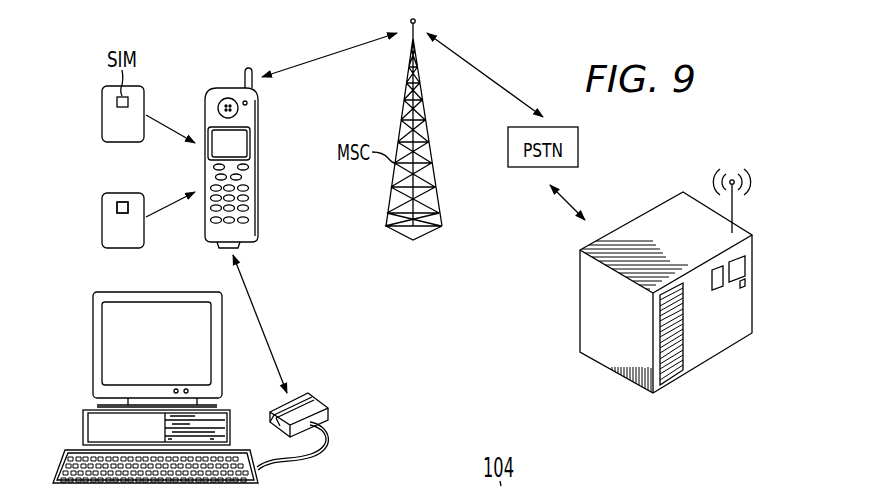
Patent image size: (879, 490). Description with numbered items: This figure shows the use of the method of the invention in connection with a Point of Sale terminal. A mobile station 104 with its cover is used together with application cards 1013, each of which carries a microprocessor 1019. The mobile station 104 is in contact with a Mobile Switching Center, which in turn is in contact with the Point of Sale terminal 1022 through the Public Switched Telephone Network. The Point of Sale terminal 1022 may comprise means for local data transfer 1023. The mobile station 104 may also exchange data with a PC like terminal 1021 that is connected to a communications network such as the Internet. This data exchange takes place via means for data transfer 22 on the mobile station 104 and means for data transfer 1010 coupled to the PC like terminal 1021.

The mobile station 104 is at (228, 88).
The means for data transfer 22 is at (224, 246).
The application cards 1013 is at (102, 112).
The microprocessor 1019 is at (122, 202).
The PC like terminal 1021 is at (93, 346).
The means for data transfer 1010 is at (320, 404).
The Point of Sale (POS) terminal 1022 is at (716, 350).
The means for local data transfer 1023 is at (735, 200).